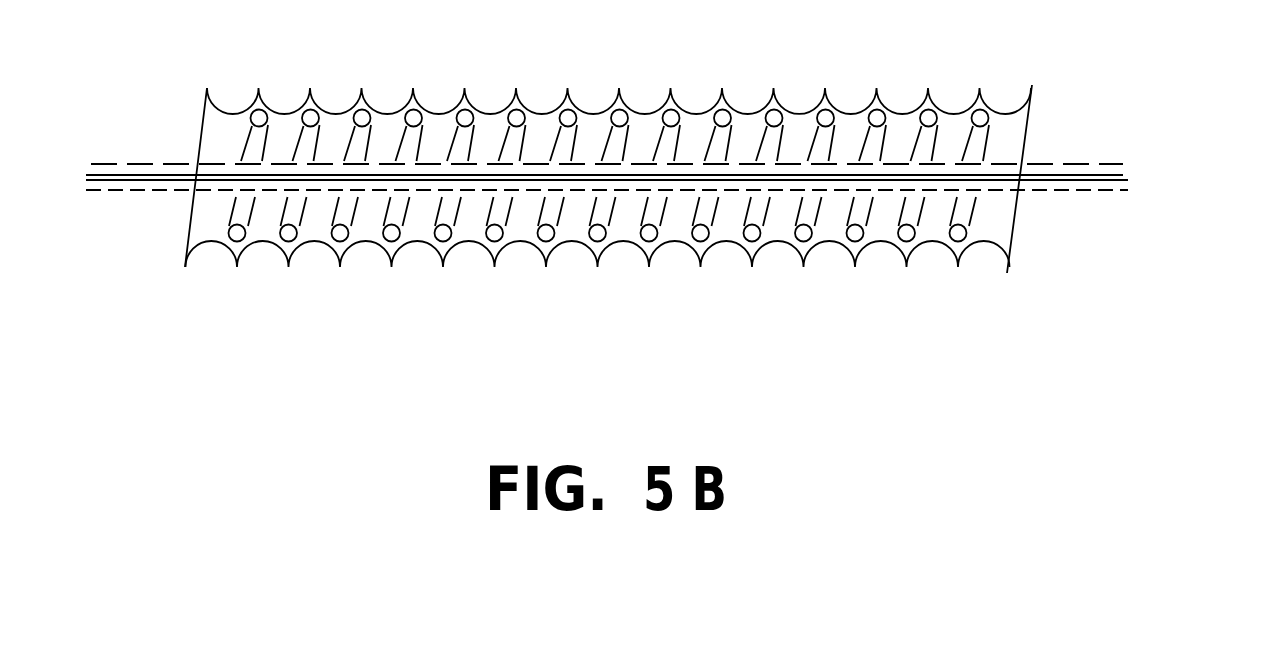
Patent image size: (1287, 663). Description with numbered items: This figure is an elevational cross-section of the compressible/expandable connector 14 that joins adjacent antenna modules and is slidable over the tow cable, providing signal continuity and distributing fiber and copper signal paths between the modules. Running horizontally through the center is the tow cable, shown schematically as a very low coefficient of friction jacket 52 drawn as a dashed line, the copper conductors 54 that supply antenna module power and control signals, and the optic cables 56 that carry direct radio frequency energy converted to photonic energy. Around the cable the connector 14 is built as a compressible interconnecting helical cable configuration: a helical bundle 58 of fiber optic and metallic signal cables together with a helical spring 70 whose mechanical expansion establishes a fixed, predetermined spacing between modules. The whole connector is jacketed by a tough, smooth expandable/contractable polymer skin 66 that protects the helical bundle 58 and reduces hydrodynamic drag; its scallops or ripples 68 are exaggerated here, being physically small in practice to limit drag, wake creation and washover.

The connector 14 is at (105, 87).
The low coefficient of friction jacket 52 is at (1108, 190).
The copper conductors 54 is at (1122, 175).
The optic cables 56 is at (1102, 163).
The helical bundle 58 is at (630, 143).
The polymer skin 66 is at (333, 115).
The ripples 68 is at (467, 100).
The helical spring 70 is at (980, 110).